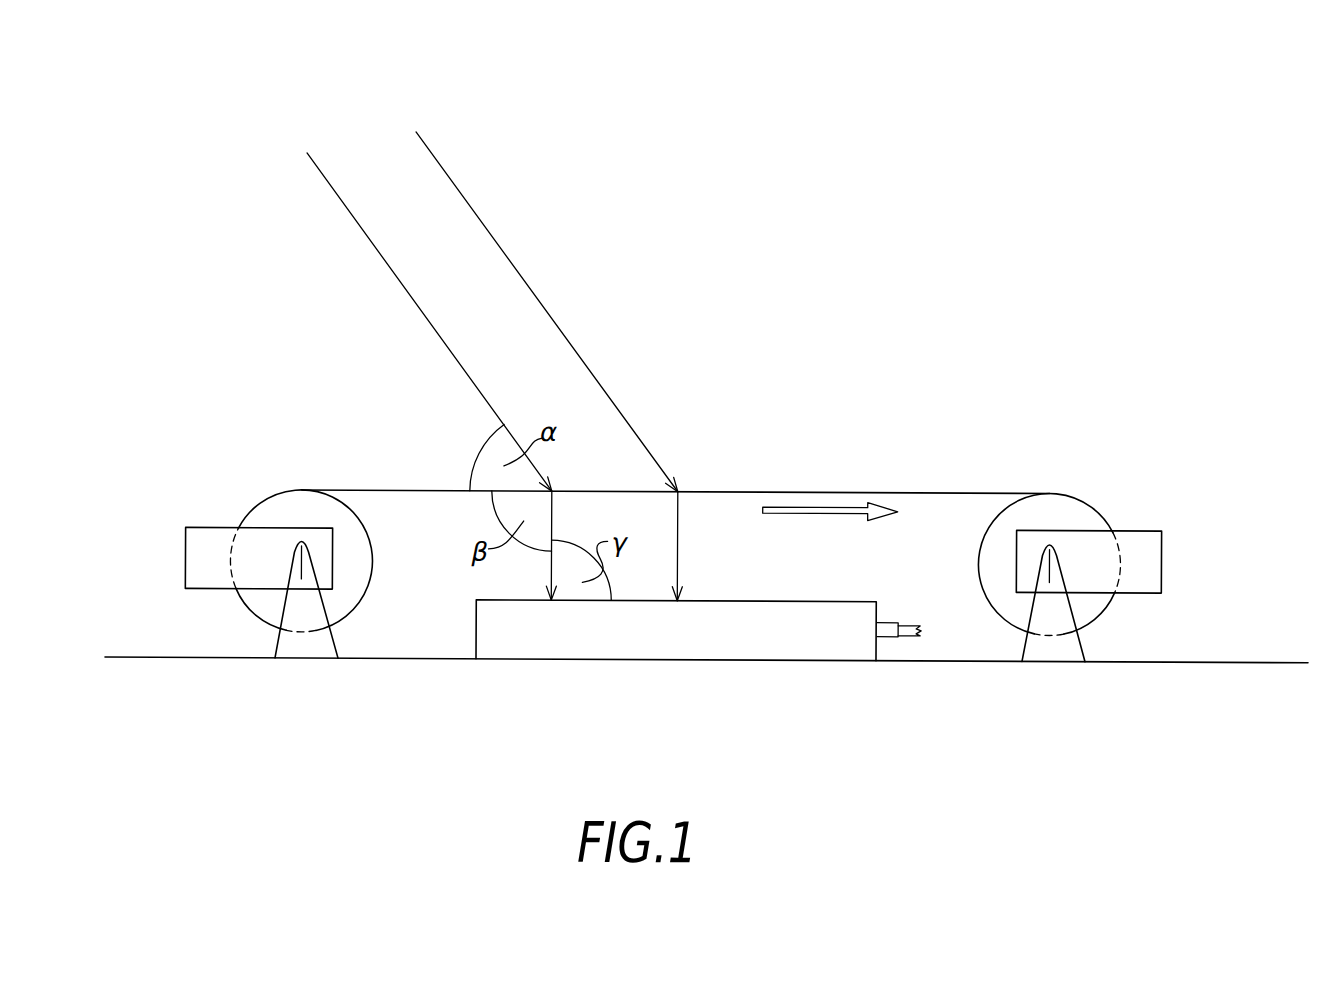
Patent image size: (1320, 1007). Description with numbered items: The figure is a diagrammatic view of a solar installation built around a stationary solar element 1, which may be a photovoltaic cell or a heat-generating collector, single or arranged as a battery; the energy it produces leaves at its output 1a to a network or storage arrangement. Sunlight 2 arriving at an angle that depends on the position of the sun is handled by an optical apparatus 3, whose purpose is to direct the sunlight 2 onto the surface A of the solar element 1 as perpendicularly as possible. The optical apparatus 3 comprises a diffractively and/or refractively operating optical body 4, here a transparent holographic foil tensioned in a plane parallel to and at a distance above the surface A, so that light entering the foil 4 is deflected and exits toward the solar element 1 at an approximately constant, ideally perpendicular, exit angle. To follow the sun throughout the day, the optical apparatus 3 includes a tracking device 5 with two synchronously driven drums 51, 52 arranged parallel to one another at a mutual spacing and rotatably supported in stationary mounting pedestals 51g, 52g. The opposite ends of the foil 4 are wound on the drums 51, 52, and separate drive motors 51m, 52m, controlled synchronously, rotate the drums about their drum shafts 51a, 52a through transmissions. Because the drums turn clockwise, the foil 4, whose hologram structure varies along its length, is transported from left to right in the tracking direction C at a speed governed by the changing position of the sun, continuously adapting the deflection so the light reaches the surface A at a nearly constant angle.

The solar element 1 is at (665, 630).
The output 1a is at (907, 633).
The sunlight 2 is at (400, 282).
The optical apparatus 3 is at (773, 357).
The optical body 4 is at (925, 489).
The tracking device 5 is at (217, 498).
The first drum 51 is at (275, 507).
The drive motor 51m is at (200, 542).
The drum shaft 51a is at (320, 560).
The mounting pedestal 51g is at (300, 640).
The second drum 52 is at (1058, 508).
The drive motor 52m is at (1142, 547).
The drum shaft 52a is at (1029, 561).
The mounting pedestal 52g is at (1053, 638).
The surface of the solar element A is at (698, 598).
The tracking direction C is at (830, 524).